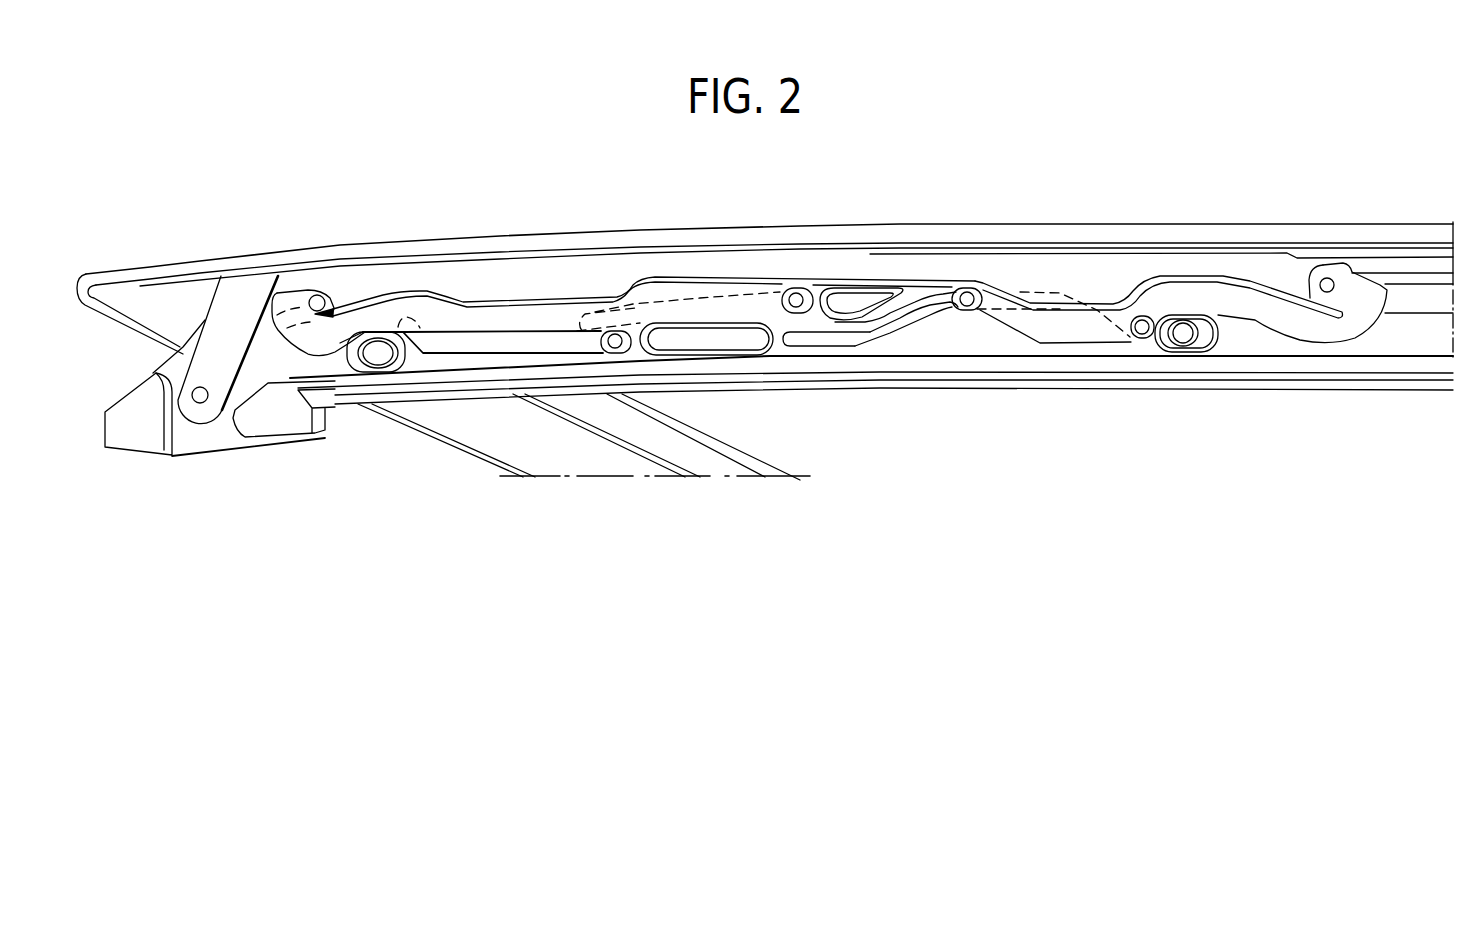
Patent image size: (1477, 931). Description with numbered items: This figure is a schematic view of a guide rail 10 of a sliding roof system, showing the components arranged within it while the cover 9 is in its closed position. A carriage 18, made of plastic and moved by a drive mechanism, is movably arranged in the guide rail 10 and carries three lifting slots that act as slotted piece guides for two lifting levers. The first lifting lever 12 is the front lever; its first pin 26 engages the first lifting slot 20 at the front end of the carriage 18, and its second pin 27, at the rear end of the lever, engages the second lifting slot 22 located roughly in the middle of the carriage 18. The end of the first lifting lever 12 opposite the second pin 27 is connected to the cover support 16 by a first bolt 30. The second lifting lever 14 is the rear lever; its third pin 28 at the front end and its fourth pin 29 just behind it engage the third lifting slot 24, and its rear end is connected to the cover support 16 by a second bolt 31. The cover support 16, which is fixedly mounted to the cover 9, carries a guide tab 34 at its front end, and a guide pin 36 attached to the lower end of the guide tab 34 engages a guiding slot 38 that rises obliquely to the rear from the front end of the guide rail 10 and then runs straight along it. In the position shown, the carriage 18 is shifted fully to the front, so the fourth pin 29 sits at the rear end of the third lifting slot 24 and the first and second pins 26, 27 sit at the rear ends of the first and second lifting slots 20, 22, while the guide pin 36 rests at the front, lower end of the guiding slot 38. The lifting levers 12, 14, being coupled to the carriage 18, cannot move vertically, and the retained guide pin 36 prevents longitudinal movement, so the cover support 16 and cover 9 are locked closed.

The cover 9 is at (867, 233).
The guide rail 10 is at (1372, 367).
The first lifting lever 12 is at (457, 312).
The second lifting lever 14 is at (1222, 295).
The cover support 16 is at (553, 277).
The carriage 18 is at (963, 340).
The first lifting slot 20 is at (508, 345).
The second lifting slot 22 is at (633, 313).
The third lifting slot 24 is at (830, 340).
The first pin 26 is at (617, 343).
The second pin 27 is at (793, 297).
The third pin 28 is at (965, 295).
The fourth pin 29 is at (1141, 337).
The first bolt 30 is at (317, 300).
The second bolt 31 is at (1327, 283).
The guide tab 34 is at (230, 295).
The guide pin 36 is at (200, 403).
The guiding slot 38 is at (262, 350).